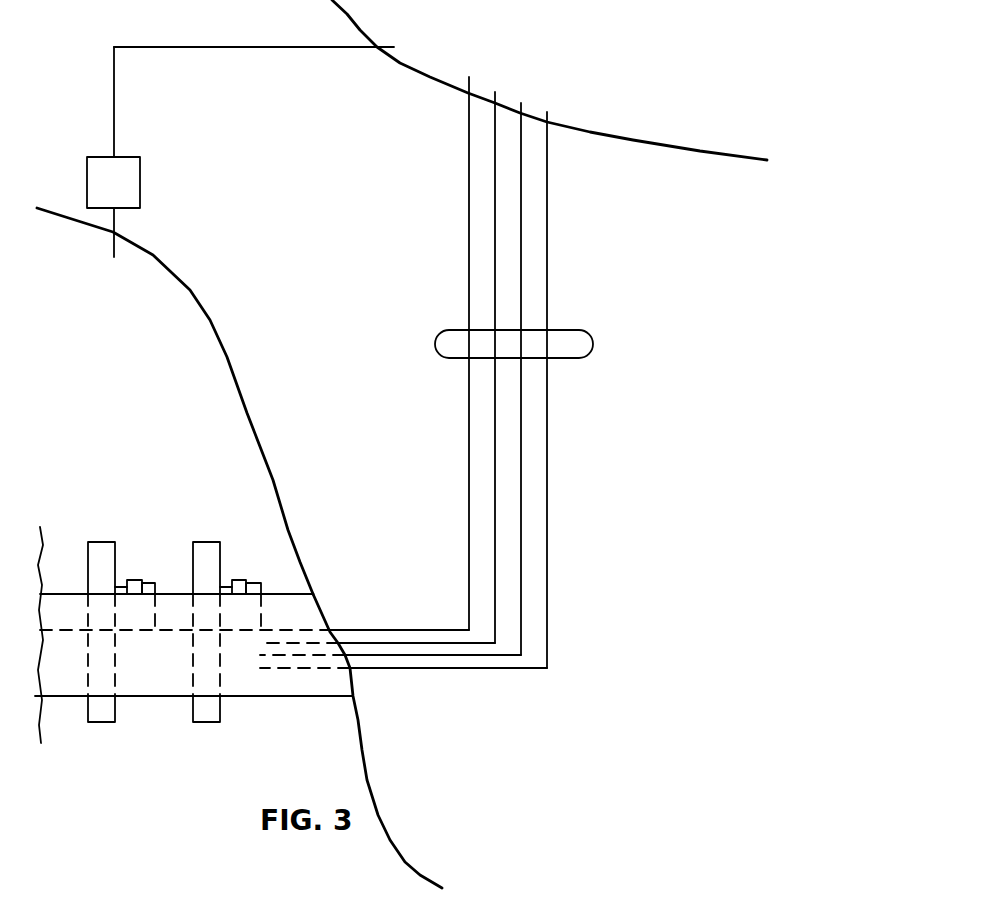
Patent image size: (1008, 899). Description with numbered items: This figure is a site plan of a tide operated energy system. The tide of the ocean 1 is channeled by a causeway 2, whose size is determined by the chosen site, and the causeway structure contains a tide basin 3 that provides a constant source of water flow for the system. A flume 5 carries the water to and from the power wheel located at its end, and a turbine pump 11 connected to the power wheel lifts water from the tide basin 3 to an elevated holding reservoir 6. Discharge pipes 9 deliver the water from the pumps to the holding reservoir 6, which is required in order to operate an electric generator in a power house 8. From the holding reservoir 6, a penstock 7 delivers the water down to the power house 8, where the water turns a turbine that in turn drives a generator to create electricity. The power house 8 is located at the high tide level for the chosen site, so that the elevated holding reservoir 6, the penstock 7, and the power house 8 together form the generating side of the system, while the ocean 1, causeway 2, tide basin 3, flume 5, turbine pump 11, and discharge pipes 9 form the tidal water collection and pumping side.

The ocean 1 is at (327, 780).
The causeway 2 is at (194, 662).
The tide basin 3 is at (152, 357).
The flume 5 is at (154, 572).
The elevated holding reservoir 6 is at (472, 14).
The penstock 7 is at (122, 93).
The power house 8 is at (152, 182).
The discharge pipes 9 is at (593, 343).
The turbine pump 11 is at (188, 556).